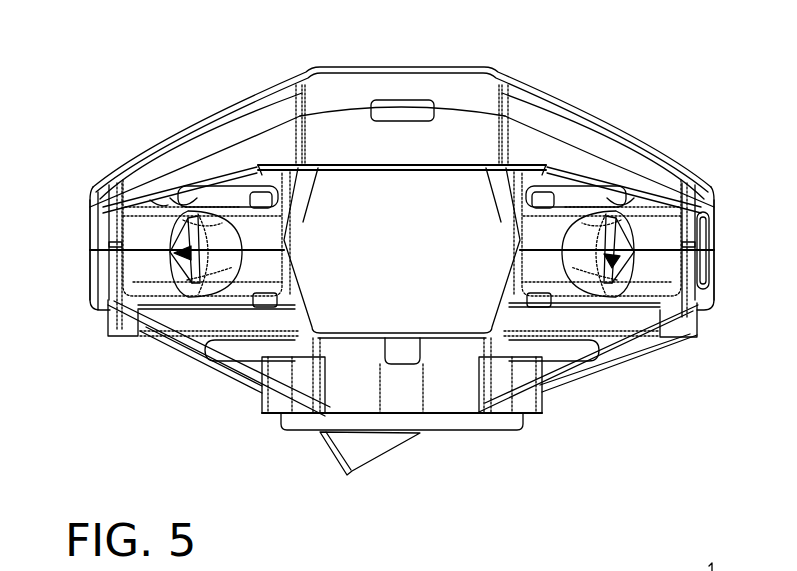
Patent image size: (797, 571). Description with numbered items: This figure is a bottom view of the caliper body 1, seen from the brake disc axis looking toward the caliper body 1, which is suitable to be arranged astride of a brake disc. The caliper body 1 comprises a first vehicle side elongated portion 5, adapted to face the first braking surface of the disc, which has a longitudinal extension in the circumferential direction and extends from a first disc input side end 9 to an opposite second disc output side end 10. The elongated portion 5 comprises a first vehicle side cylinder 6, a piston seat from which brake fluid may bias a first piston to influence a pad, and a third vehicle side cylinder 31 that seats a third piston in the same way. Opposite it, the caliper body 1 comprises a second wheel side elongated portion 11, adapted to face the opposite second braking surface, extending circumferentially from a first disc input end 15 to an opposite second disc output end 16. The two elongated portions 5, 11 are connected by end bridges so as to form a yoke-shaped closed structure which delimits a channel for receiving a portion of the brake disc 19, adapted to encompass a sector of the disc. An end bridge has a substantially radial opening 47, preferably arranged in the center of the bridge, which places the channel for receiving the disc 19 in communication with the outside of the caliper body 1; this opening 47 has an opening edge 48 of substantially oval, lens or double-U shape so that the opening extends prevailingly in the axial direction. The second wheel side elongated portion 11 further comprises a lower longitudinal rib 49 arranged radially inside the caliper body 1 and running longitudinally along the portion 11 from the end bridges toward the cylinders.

The caliper body 1 is at (606, 96).
The first vehicle side elongated portion 5 is at (413, 403).
The vehicle side cylinder 6 is at (427, 383).
The first disc input side end 9 is at (90, 278).
The second disc output side end 10 is at (706, 296).
The second wheel side elongated portion 11 is at (470, 101).
The first disc input end 15 is at (91, 195).
The second disc output end 16 is at (714, 190).
The channel for receiving a portion of the brake disc 19 is at (192, 233).
The vehicle side cylinder 31 is at (380, 392).
The radial opening 47 is at (100, 188).
The opening edge 48 is at (657, 203).
The lower longitudinal rib 49 is at (607, 143).